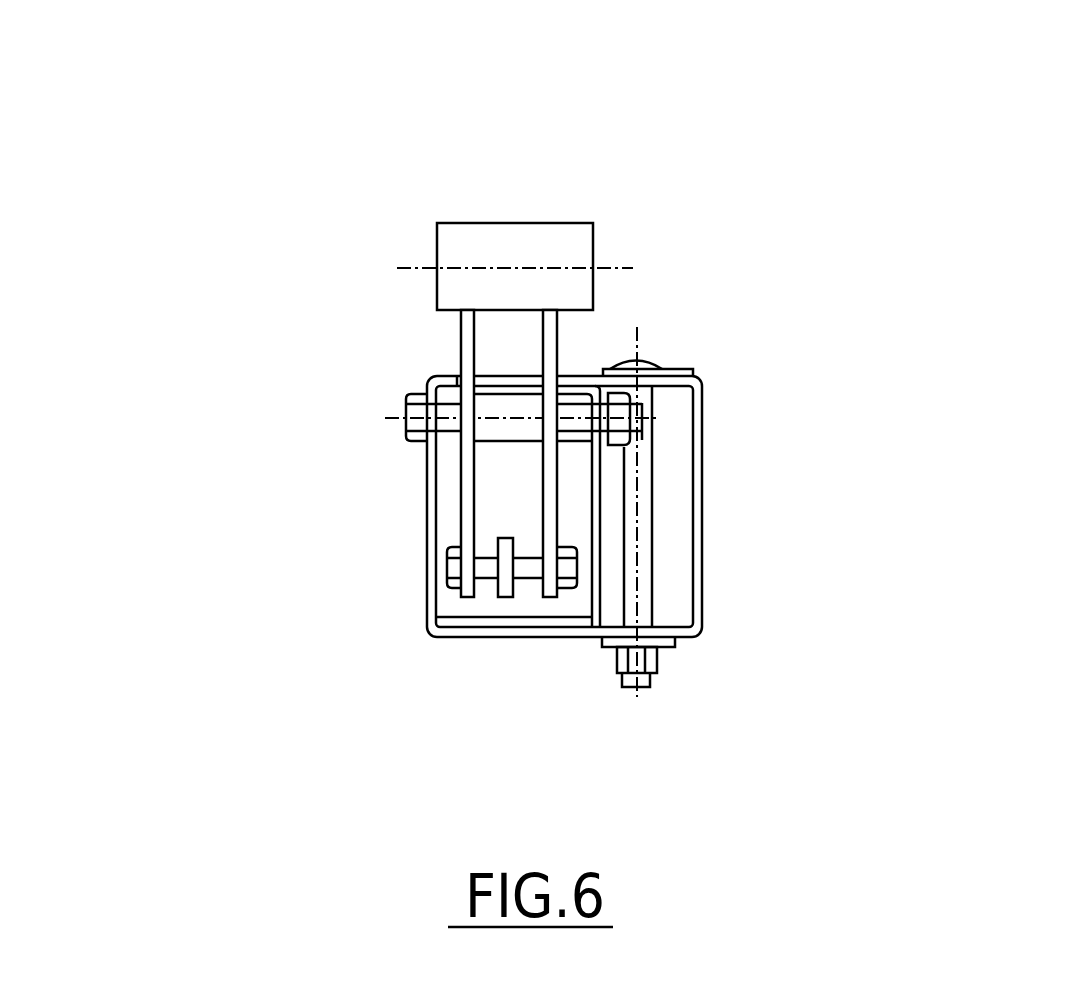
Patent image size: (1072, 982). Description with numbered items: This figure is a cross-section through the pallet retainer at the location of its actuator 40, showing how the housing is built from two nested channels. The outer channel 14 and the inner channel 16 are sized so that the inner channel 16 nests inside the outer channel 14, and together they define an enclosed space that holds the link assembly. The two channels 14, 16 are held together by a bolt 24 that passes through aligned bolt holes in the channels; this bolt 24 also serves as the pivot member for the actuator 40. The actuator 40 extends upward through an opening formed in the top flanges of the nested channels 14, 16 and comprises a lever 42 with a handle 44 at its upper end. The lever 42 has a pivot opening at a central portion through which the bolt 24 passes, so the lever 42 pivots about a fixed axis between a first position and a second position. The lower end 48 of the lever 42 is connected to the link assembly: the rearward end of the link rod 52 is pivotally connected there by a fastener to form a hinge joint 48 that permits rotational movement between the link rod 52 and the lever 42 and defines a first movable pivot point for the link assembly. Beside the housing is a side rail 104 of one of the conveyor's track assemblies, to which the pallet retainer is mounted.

The actuator 40 is at (758, 200).
The outer channel 14 is at (425, 527).
The inner channel 16 is at (601, 546).
The bolt 24 is at (405, 395).
The lever 42 is at (460, 491).
The handle 44 is at (540, 222).
The lower end of the lever 48 is at (447, 583).
The link rod 52 is at (510, 598).
The side rail 104 is at (704, 418).